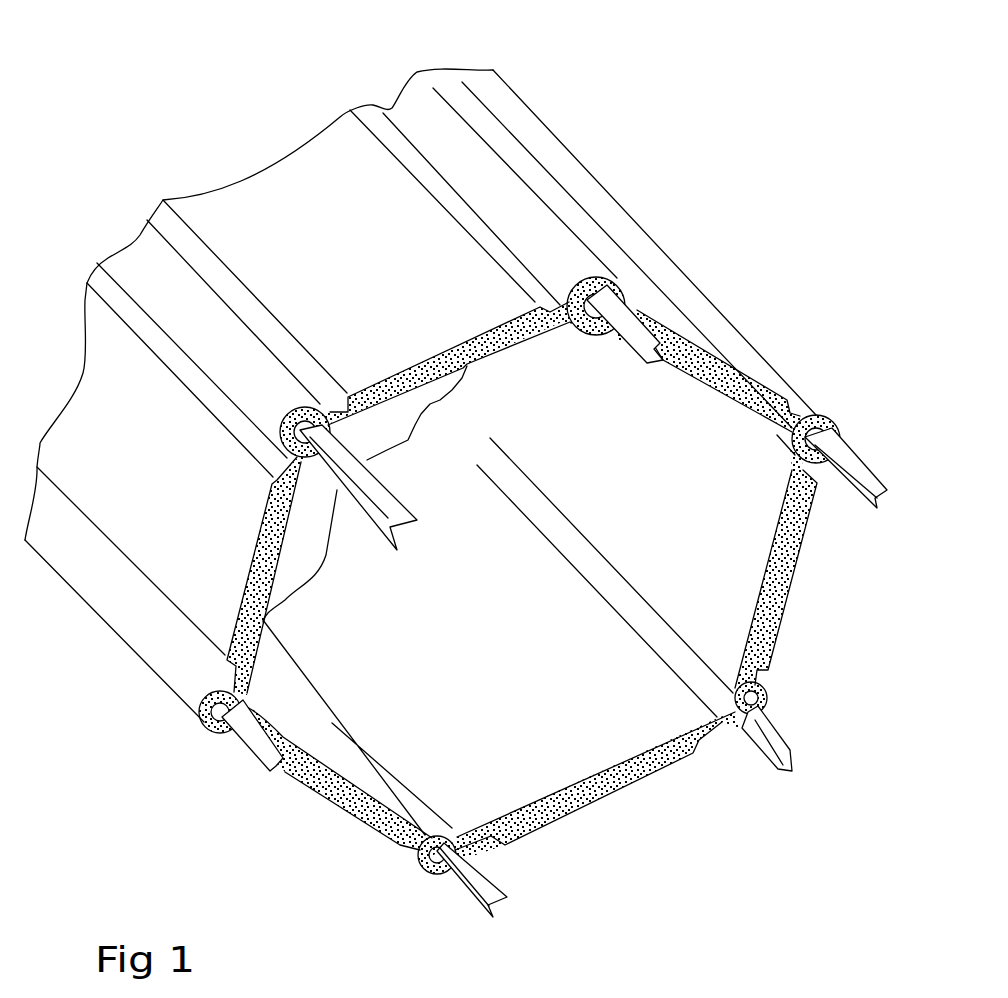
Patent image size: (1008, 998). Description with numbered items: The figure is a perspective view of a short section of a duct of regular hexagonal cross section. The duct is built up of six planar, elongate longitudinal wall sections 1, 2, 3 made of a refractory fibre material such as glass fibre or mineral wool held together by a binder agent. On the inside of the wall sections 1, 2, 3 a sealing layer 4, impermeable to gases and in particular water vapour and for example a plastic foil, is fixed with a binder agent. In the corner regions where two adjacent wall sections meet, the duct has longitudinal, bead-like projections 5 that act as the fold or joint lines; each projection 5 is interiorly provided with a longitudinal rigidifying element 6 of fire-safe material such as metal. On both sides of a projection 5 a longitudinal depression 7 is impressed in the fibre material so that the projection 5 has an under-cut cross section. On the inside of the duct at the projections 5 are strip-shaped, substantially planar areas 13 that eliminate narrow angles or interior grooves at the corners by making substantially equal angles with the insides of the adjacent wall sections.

The wall section 1 is at (97, 375).
The wall section 2 is at (288, 186).
The wall section 3 is at (458, 92).
The sealing layer 4 is at (582, 755).
The projection 5 is at (623, 227).
The rigidifying element 6 is at (633, 338).
The depression 7 is at (550, 297).
The planar area 13 is at (635, 618).